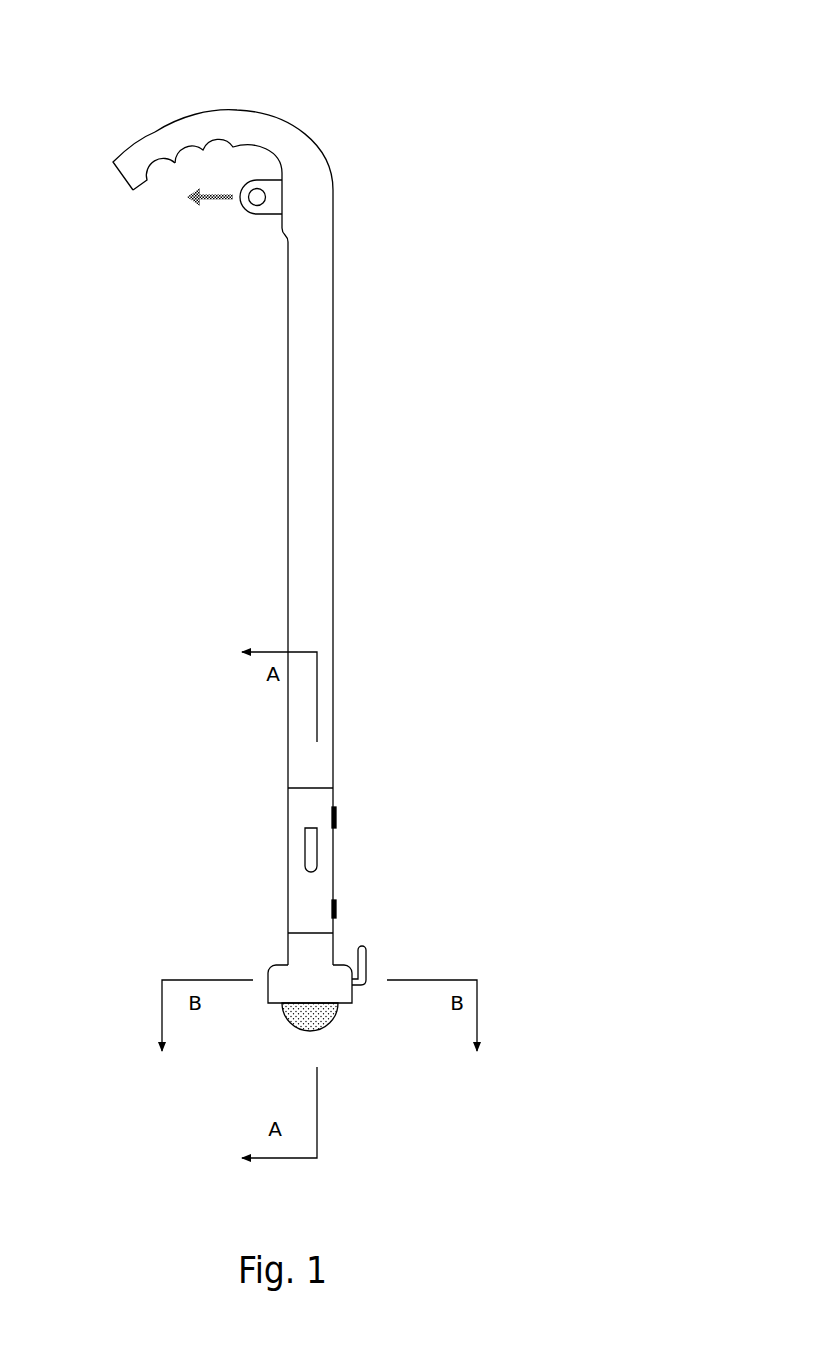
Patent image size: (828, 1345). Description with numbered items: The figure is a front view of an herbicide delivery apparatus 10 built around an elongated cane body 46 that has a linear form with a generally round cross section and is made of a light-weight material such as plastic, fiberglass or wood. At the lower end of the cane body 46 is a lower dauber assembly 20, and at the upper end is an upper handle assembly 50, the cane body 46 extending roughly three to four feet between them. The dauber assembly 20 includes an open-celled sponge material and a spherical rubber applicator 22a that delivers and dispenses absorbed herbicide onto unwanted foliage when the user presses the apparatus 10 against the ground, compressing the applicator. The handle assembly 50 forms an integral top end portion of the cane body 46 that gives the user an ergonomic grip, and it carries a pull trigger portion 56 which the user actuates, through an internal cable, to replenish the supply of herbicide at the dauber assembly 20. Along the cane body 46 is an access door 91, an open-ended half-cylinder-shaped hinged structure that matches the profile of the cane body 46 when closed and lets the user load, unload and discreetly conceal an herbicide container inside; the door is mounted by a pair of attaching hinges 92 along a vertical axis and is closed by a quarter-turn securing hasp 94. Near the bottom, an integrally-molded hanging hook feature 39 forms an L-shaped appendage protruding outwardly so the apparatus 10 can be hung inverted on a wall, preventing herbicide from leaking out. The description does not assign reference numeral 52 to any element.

The herbicide delivery apparatus 10 is at (564, 71).
The lower dauber assembly 20 is at (250, 927).
The spherical rubber applicator 22a is at (332, 1023).
The hanging hook feature 39 is at (368, 957).
The cane body 46 is at (334, 393).
The upper handle assembly 50 is at (266, 129).
The hook tip 52 is at (155, 132).
The pull trigger portion 56 is at (253, 210).
The access door 91 is at (318, 897).
The attaching hinges 92 is at (337, 820).
The quarter-turn securing hasp 94 is at (318, 838).